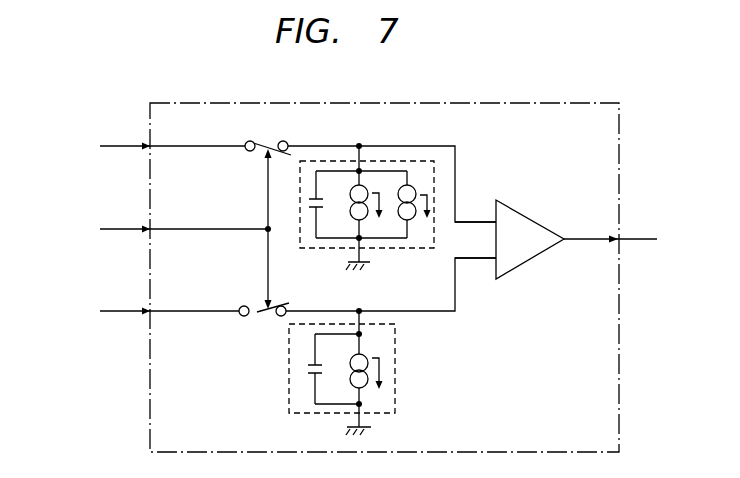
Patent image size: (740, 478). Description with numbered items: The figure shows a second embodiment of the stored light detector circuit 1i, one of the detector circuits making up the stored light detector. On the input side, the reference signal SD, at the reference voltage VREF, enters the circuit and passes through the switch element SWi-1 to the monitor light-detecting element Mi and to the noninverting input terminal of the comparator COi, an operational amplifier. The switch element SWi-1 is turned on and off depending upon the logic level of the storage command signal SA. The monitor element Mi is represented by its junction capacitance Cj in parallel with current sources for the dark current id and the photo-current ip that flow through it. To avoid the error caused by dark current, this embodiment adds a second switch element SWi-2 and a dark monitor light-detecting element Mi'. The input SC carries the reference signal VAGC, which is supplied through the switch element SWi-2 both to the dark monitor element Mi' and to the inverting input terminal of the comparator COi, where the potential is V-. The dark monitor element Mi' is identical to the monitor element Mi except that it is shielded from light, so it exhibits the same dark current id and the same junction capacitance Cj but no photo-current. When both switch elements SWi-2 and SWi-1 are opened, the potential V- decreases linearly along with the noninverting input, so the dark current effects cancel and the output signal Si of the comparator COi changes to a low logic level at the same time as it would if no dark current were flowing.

The stored light detector circuit 1i is at (533, 103).
The reference signal SD is at (151, 145).
The reference voltage VREF is at (64, 173).
The storage command signal SA is at (162, 228).
The comparison signal input SC is at (148, 308).
The reference signal VAGC is at (66, 338).
The switch element SWi-1 is at (268, 146).
The switch element SWi-2 is at (265, 315).
The junction capacitance Cj is at (318, 199).
The dark current id is at (379, 193).
The photo-current ip is at (428, 195).
The monitor light-detecting element Mi is at (365, 219).
The dark monitor light-detecting element Mi' is at (366, 368).
The inverting input terminal potential V- is at (456, 296).
The comparator COi is at (510, 262).
The output signal Si is at (621, 241).